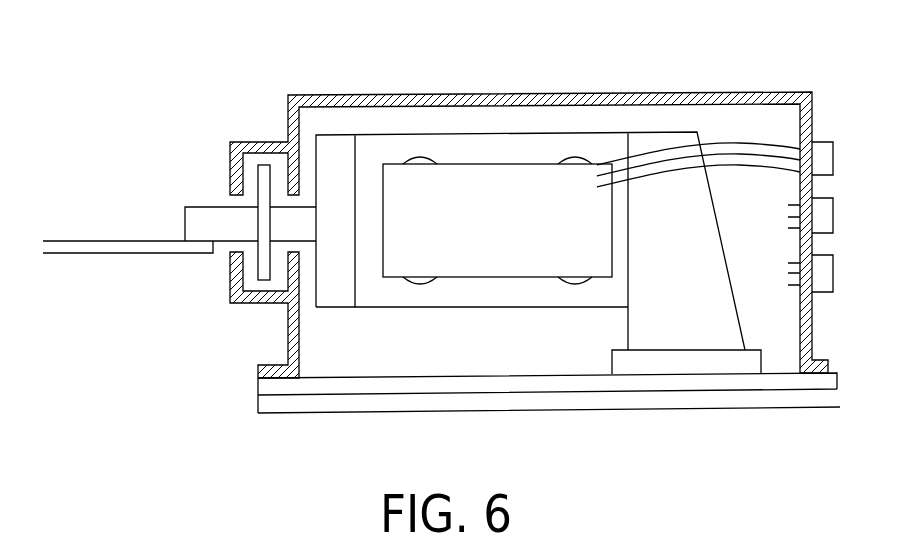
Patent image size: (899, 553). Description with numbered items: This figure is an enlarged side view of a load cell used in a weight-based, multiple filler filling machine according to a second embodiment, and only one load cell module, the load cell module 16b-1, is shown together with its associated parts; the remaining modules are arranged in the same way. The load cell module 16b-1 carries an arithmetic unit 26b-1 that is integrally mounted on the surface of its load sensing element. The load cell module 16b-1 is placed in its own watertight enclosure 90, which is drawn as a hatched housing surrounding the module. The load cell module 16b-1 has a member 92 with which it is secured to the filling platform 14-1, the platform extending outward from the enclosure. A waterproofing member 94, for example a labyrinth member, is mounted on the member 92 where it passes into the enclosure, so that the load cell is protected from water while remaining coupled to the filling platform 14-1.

The filling platform 14-1 is at (115, 245).
The member 92 is at (208, 218).
The waterproofing member 94 is at (262, 185).
The load cell module 16b-1 is at (378, 140).
The watertight enclosure 90 is at (513, 112).
The arithmetic unit 26b-1 is at (487, 262).